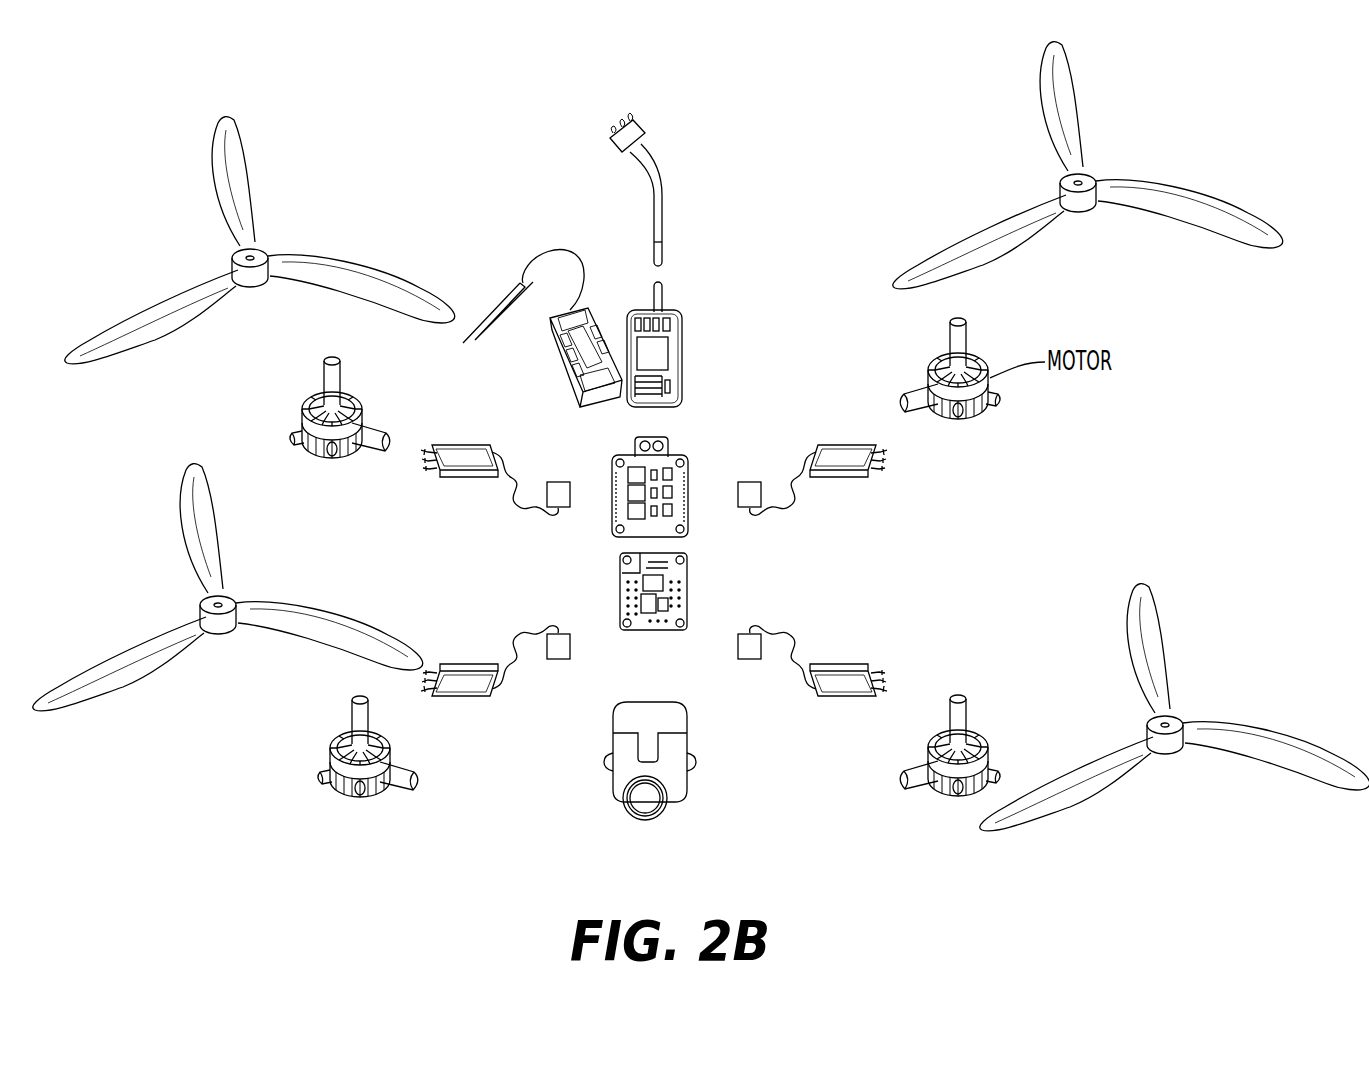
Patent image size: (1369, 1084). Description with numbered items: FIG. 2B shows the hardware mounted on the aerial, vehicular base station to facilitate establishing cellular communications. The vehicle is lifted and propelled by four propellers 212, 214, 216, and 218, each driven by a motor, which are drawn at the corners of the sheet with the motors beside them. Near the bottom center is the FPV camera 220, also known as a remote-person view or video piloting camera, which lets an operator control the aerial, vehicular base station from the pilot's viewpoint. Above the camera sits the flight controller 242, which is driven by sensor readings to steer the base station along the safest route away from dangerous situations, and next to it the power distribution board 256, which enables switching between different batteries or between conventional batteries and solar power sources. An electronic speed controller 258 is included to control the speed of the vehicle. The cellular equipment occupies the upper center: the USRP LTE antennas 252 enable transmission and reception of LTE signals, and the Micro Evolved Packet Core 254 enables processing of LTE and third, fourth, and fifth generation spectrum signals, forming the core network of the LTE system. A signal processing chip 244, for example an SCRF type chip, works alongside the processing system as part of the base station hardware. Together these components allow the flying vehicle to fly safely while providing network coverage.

The propeller 212 is at (323, 254).
The propeller 214 is at (263, 602).
The propeller 216 is at (1215, 726).
The propeller 218 is at (1137, 184).
The FPV camera 220 is at (612, 782).
The flight controller 242 is at (618, 594).
The signal processing chip 244 is at (469, 697).
The USRP LTE antennas 252 is at (657, 165).
The Micro Evolved Packet Core 254 is at (686, 340).
The power distribution board 256 is at (688, 517).
The electronic speed controller 258 is at (837, 687).